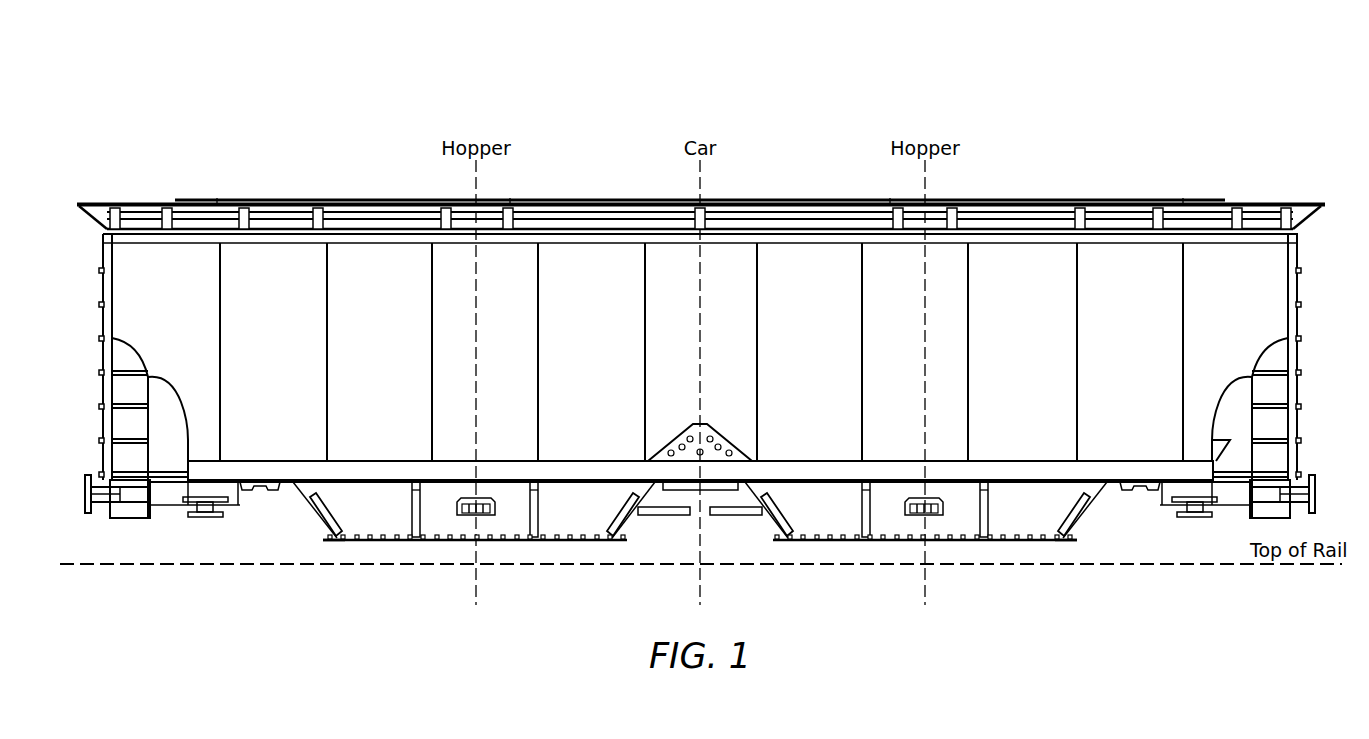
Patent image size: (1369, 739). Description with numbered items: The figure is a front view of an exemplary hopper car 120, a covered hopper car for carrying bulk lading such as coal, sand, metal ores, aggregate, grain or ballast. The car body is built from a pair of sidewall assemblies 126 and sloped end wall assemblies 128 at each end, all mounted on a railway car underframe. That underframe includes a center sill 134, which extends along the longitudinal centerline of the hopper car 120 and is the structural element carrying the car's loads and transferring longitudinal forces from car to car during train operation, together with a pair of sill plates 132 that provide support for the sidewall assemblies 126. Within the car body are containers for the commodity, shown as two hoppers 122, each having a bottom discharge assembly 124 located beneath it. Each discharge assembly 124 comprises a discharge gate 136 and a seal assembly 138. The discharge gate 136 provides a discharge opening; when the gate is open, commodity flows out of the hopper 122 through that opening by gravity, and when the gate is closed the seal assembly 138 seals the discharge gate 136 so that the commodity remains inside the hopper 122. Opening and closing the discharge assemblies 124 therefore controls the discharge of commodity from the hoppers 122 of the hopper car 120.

The hopper car 120 is at (140, 79).
The hopper 122 is at (378, 198).
The discharge assembly 124 is at (370, 515).
The sidewall assembly 126 is at (607, 362).
The sloped end wall assembly 128 is at (150, 405).
The sill plate 132 is at (1118, 460).
The center sill 134 is at (103, 505).
The discharge gate 136 is at (393, 545).
The seal assembly 138 is at (337, 545).